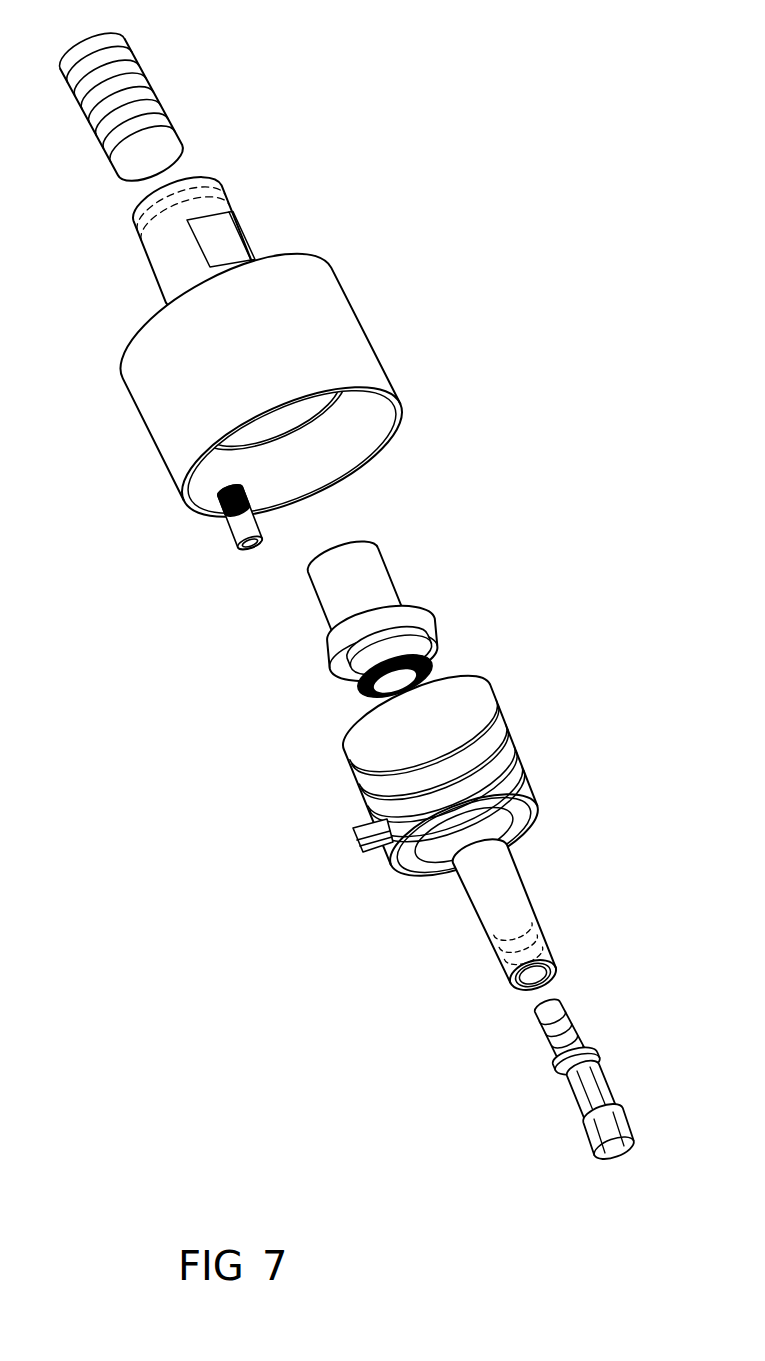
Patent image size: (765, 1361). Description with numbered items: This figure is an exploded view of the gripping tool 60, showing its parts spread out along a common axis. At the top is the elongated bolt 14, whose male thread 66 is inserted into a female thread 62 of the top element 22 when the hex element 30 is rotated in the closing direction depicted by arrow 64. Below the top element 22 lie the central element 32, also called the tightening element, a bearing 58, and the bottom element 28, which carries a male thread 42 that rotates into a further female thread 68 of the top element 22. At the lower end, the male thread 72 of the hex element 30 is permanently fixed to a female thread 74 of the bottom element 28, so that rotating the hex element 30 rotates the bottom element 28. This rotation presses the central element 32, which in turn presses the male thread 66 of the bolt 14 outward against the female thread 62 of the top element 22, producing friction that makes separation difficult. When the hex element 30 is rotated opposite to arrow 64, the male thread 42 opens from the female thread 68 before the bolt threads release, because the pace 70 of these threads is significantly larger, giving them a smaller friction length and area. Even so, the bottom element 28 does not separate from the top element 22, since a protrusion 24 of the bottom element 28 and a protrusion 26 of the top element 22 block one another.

The elongated bolt 14 is at (185, 78).
The male thread of the bolt 66 is at (127, 131).
The female thread 62 is at (205, 187).
The top element of the gripping tool 22 is at (167, 392).
The female thread 68 is at (292, 444).
The protrusion of the top element 26 is at (242, 527).
The central element 32 is at (337, 593).
The male thread 42 is at (480, 735).
The pace of the thread 70 is at (407, 763).
The bearing 58 is at (367, 700).
The protrusion of the bottom element 24 is at (367, 857).
The bottom element of the gripping tool 28 is at (490, 887).
The female thread 74 is at (520, 943).
The male thread 72 is at (545, 1042).
The hex element 30 is at (577, 1110).
The arrow 64 is at (578, 1170).
The gripping tool 60 is at (327, 967).